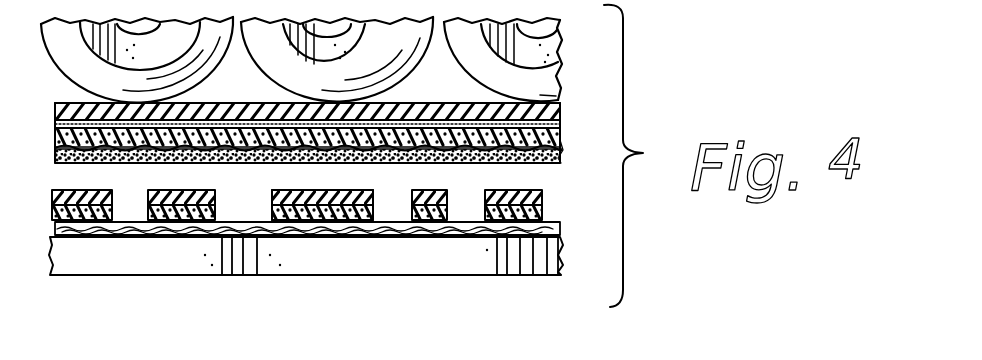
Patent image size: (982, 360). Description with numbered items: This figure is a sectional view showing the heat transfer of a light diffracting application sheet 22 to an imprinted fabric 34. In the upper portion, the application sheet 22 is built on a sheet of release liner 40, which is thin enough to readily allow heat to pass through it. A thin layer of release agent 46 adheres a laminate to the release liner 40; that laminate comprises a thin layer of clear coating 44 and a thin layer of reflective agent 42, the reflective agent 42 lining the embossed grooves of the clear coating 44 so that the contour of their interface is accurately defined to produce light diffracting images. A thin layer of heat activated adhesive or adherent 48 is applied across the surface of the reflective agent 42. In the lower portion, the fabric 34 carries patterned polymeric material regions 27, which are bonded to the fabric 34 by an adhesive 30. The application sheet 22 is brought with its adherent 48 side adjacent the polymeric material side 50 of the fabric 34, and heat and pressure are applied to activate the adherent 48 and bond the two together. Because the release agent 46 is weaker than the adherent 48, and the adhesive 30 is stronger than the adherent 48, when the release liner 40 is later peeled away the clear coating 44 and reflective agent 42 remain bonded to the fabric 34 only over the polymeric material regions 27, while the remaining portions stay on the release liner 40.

The light diffracting application sheet 22 is at (45, 175).
The polymeric material regions 27 is at (147, 197).
The adhesive 30 is at (214, 222).
The fabric 34 is at (346, 237).
The release liner 40 is at (562, 104).
The reflective agent 42 is at (562, 152).
The clear coating 44 is at (562, 148).
The release agent 46 is at (562, 128).
The heat activated adhesive or adherent 48 is at (563, 168).
The polymeric material side 50 is at (301, 191).